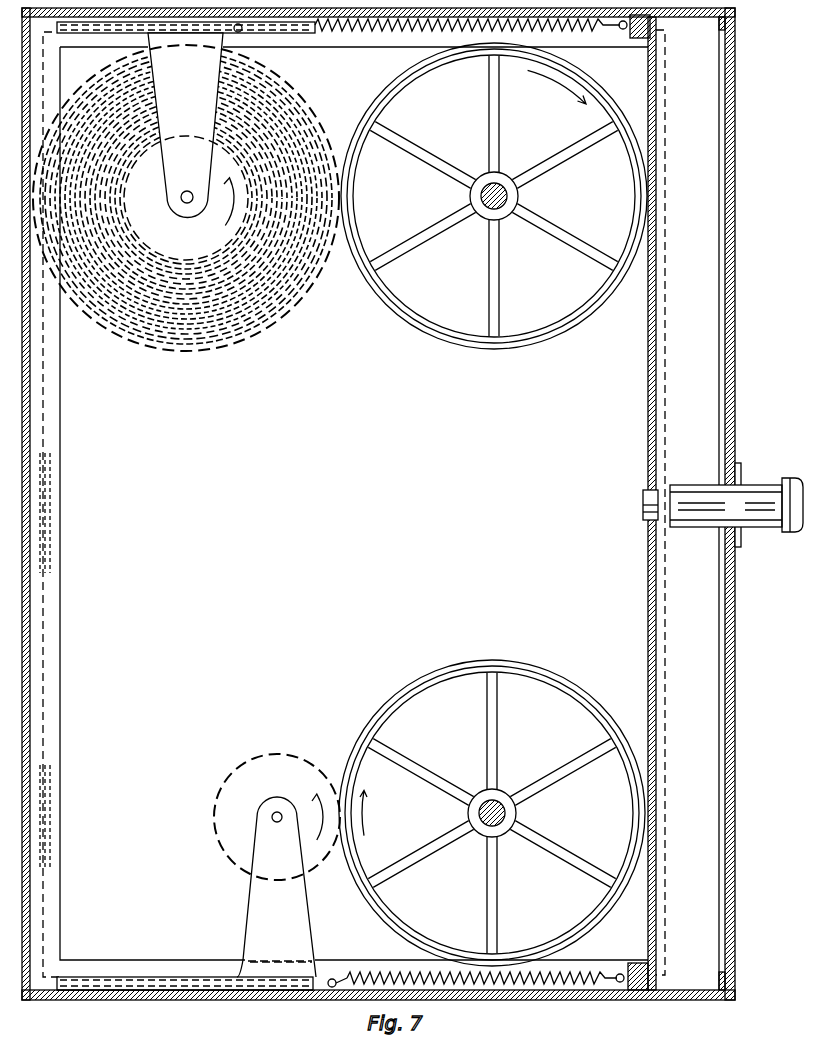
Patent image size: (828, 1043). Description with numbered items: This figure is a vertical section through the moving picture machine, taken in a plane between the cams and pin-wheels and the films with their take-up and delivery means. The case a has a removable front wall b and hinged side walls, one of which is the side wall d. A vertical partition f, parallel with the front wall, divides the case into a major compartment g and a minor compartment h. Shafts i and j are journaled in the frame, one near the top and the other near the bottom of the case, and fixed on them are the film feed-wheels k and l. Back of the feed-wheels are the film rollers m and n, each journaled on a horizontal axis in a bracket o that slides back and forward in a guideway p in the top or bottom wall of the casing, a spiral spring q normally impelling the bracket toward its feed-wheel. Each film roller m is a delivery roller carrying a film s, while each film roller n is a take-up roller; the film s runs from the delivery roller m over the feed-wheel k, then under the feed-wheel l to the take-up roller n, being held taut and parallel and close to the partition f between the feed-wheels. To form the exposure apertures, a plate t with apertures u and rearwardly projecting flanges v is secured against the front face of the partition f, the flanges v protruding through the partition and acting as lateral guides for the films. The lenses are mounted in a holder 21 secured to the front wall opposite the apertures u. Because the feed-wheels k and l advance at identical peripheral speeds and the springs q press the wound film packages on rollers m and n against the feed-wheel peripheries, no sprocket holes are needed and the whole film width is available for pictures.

The removable front wall b is at (735, 858).
The case a is at (262, 1000).
The vertical partition f is at (656, 872).
The film s is at (648, 420).
The major compartment g is at (703, 503).
The guideway p is at (107, 22).
The hinged side wall d is at (208, 990).
The spiral spring q is at (352, 17).
The film roller m is at (186, 198).
The bracket o is at (186, 505).
The minor compartment h is at (295, 936).
The film roller n is at (277, 817).
The film feed-wheel k is at (478, 350).
The shaft i is at (494, 200).
The film feed-wheel l is at (520, 672).
The shaft j is at (492, 817).
The holder 21 is at (736, 509).
The plate t is at (654, 495).
The aperture u is at (645, 505).
The rearwardly projecting flange v is at (645, 512).